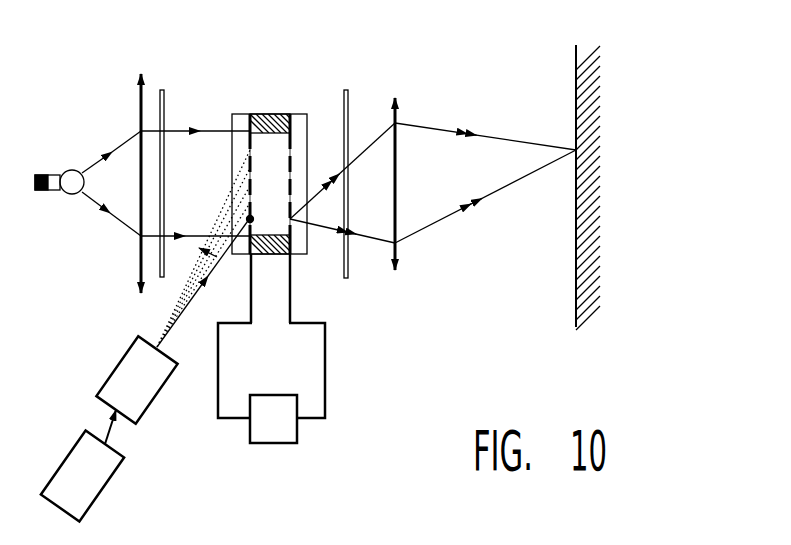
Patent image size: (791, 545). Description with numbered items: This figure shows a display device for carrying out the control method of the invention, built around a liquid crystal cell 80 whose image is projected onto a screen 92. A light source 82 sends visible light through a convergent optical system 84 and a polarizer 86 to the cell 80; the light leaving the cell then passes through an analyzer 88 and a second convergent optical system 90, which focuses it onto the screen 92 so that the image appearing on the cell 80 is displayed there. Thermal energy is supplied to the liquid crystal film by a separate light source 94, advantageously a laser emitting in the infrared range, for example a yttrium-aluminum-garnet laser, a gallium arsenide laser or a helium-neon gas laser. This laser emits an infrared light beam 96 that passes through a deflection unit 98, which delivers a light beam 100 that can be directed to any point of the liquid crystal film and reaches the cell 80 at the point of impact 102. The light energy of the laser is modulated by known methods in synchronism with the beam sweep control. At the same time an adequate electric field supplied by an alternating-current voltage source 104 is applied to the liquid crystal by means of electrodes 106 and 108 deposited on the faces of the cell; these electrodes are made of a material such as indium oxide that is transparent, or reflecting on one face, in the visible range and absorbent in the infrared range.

The liquid crystal cell 80 is at (273, 97).
The light source 82 is at (69, 172).
The convergent optical system 84 is at (140, 105).
The polarizer 86 is at (162, 97).
The analyzer 88 is at (347, 110).
The second convergent optical system 90 is at (397, 100).
The screen 92 is at (576, 92).
The light source 94 is at (97, 455).
The infrared light beam 96 is at (100, 426).
The deflection unit 98 is at (140, 363).
The light beam 100 is at (196, 298).
The point of impact 102 is at (249, 218).
The alternating-current voltage source 104 is at (283, 428).
The electrode 106 is at (247, 128).
The electrode 108 is at (292, 128).